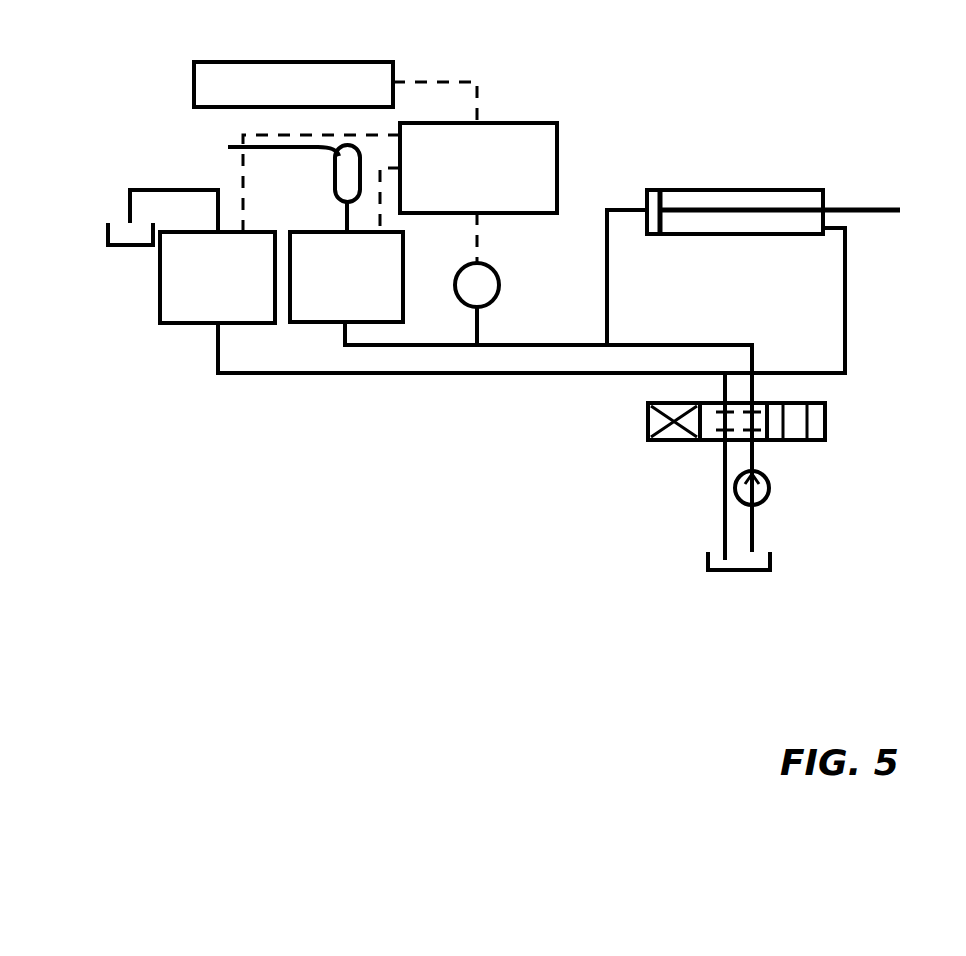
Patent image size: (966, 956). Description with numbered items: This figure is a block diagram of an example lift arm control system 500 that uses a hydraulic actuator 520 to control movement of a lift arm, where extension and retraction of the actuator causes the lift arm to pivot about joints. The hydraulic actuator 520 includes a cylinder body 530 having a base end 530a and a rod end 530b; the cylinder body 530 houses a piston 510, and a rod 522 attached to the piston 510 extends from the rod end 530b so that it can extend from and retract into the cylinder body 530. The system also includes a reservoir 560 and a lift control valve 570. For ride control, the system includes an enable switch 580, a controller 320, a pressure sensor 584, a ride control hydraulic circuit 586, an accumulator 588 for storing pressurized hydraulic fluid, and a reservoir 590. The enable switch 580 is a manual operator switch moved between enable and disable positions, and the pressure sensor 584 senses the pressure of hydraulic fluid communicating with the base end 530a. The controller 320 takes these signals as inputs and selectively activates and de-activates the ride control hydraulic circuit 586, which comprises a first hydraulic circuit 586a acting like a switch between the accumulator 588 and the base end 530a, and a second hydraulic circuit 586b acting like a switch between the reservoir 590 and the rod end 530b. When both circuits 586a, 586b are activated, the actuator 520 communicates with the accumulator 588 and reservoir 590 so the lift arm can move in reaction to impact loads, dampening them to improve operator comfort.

The lift arm control system 500 is at (302, 457).
The enable switch 580 is at (345, 60).
The controller 320 is at (478, 168).
The accumulator 588 is at (270, 184).
The reservoir 590 is at (122, 222).
The second hydraulic circuit 586b is at (217, 277).
The first hydraulic circuit 586a is at (346, 277).
The ride control hydraulic circuit 586 is at (238, 355).
The pressure sensor 584 is at (497, 272).
The hydraulic actuator 520 is at (784, 180).
The piston 510 is at (657, 237).
The cylinder body 530 is at (704, 178).
The base end 530a is at (630, 186).
The rod end 530b is at (828, 186).
The rod 522 is at (865, 214).
The lift control valve 570 is at (830, 405).
The reservoir 560 is at (772, 553).